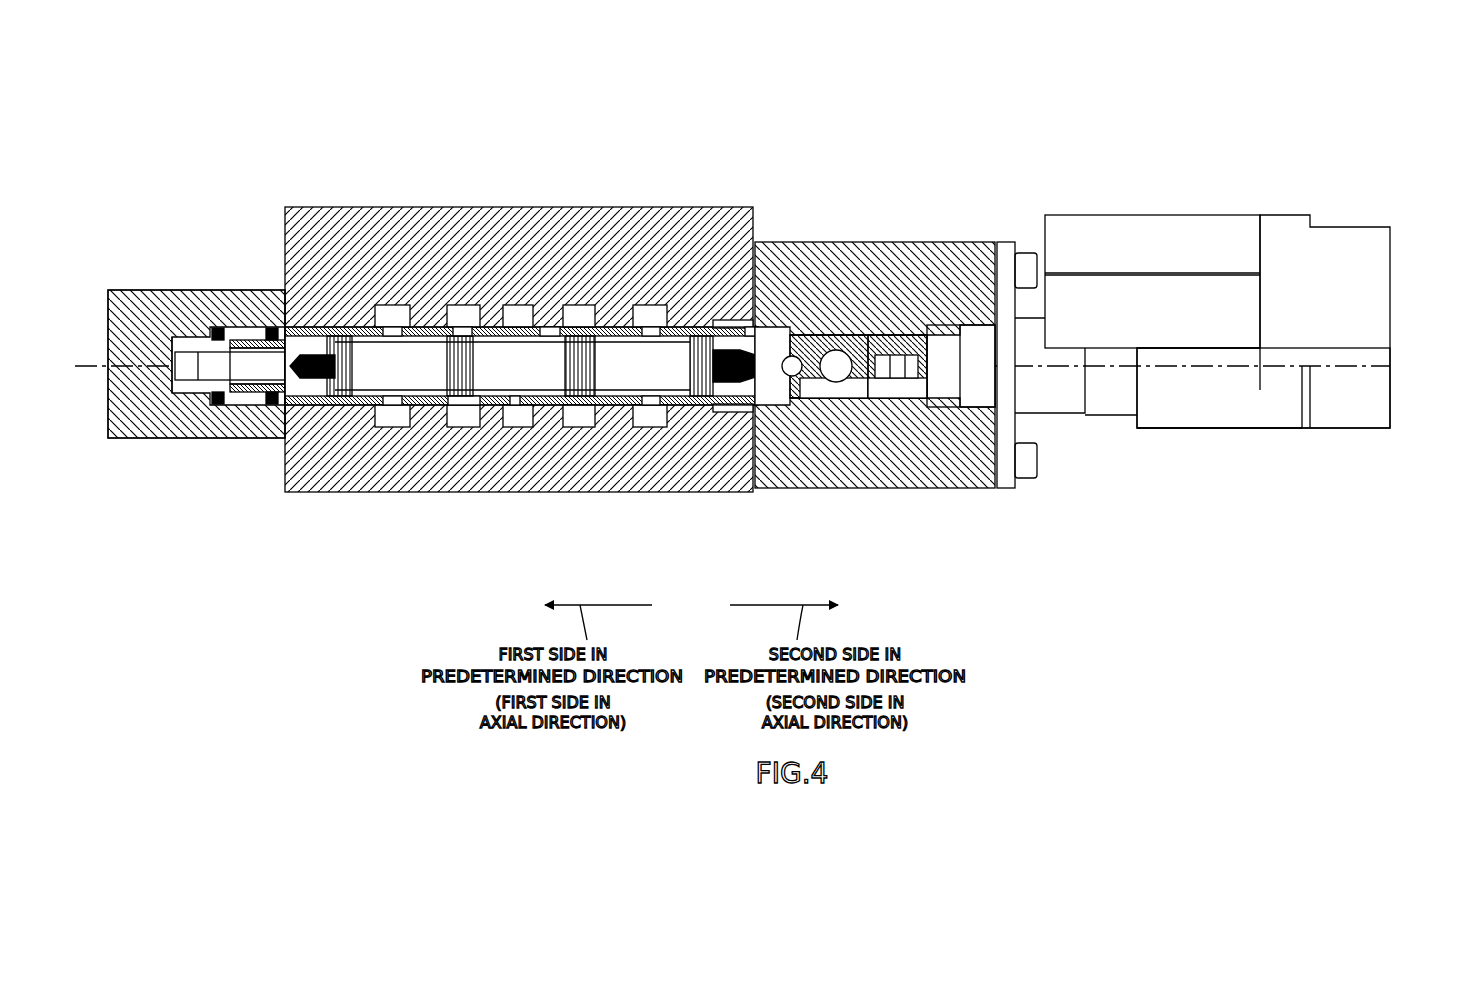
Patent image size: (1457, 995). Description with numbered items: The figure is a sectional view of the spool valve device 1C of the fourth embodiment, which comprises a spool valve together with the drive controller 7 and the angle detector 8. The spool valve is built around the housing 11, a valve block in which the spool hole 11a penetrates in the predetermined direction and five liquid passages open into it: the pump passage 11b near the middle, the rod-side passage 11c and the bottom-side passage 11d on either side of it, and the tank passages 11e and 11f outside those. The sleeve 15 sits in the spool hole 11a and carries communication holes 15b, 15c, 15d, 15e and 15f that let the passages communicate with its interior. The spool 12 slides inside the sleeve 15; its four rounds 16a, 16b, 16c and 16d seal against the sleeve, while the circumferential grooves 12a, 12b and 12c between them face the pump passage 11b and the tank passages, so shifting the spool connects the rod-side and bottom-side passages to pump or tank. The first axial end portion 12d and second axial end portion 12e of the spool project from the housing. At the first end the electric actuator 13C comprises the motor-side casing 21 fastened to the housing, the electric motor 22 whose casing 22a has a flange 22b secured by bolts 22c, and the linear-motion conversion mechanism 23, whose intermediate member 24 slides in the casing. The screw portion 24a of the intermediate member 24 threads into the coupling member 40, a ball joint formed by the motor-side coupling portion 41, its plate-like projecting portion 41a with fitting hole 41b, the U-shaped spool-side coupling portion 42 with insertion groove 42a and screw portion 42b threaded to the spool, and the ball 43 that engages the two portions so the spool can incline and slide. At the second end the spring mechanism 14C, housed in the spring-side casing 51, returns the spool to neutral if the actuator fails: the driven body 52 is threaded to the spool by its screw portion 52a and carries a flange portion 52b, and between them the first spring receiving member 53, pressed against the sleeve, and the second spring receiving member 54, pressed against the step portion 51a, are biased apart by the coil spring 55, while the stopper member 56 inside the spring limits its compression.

The spool valve device 1C is at (1330, 106).
The drive controller 7 is at (1168, 232).
The angle detector 8 is at (1385, 278).
The housing 11 is at (521, 347).
The spool hole 11a is at (300, 410).
The pump passage 11b is at (518, 308).
The rod-side passage 11c is at (462, 308).
The bottom-side passage 11d is at (578, 308).
The tank passage 11e is at (392, 308).
The tank passage 11f is at (650, 308).
The spool 12 is at (544, 349).
The circumferential groove 12a is at (548, 342).
The circumferential groove 12b is at (428, 342).
The circumferential groove 12c is at (688, 342).
The first axial end portion 12d is at (770, 335).
The second axial end portion 12e is at (300, 330).
The electric actuator 13C is at (1190, 452).
The spring mechanism 14C is at (221, 204).
The sleeve 15 is at (540, 396).
The communication hole 15b is at (520, 333).
The communication hole 15c is at (462, 333).
The communication hole 15d is at (578, 333).
The communication hole 15e is at (392, 333).
The communication hole 15f is at (650, 333).
The round 16a is at (312, 405).
The round 16b is at (460, 428).
The round 16c is at (578, 428).
The round 16d is at (660, 407).
The motor-side casing 21 is at (878, 490).
The electric motor 22 is at (1293, 432).
The casing 22a is at (1245, 430).
The flange 22b is at (1003, 490).
The bolt 22c is at (1032, 480).
The linear-motion conversion mechanism 23 is at (1080, 420).
The intermediate member 24 is at (942, 400).
The screw portion 24a is at (905, 400).
The coupling member 40 is at (872, 322).
The motor-side coupling portion 41 is at (896, 380).
The projecting portion 41a is at (838, 350).
The fitting hole 41b is at (845, 398).
The spool-side coupling portion 42 is at (813, 380).
The insertion groove 42a is at (818, 398).
The screw portion 42b is at (782, 400).
The ball 43 is at (895, 355).
The spring-side casing 51 is at (118, 438).
The step portion 51a is at (185, 332).
The driven body 52 is at (230, 330).
The screw portion 52a is at (310, 355).
The flange portion 52b is at (212, 400).
The first spring receiving member 53 is at (272, 400).
The second spring receiving member 54 is at (213, 380).
The coil spring 55 is at (248, 392).
The stopper member 56 is at (270, 328).